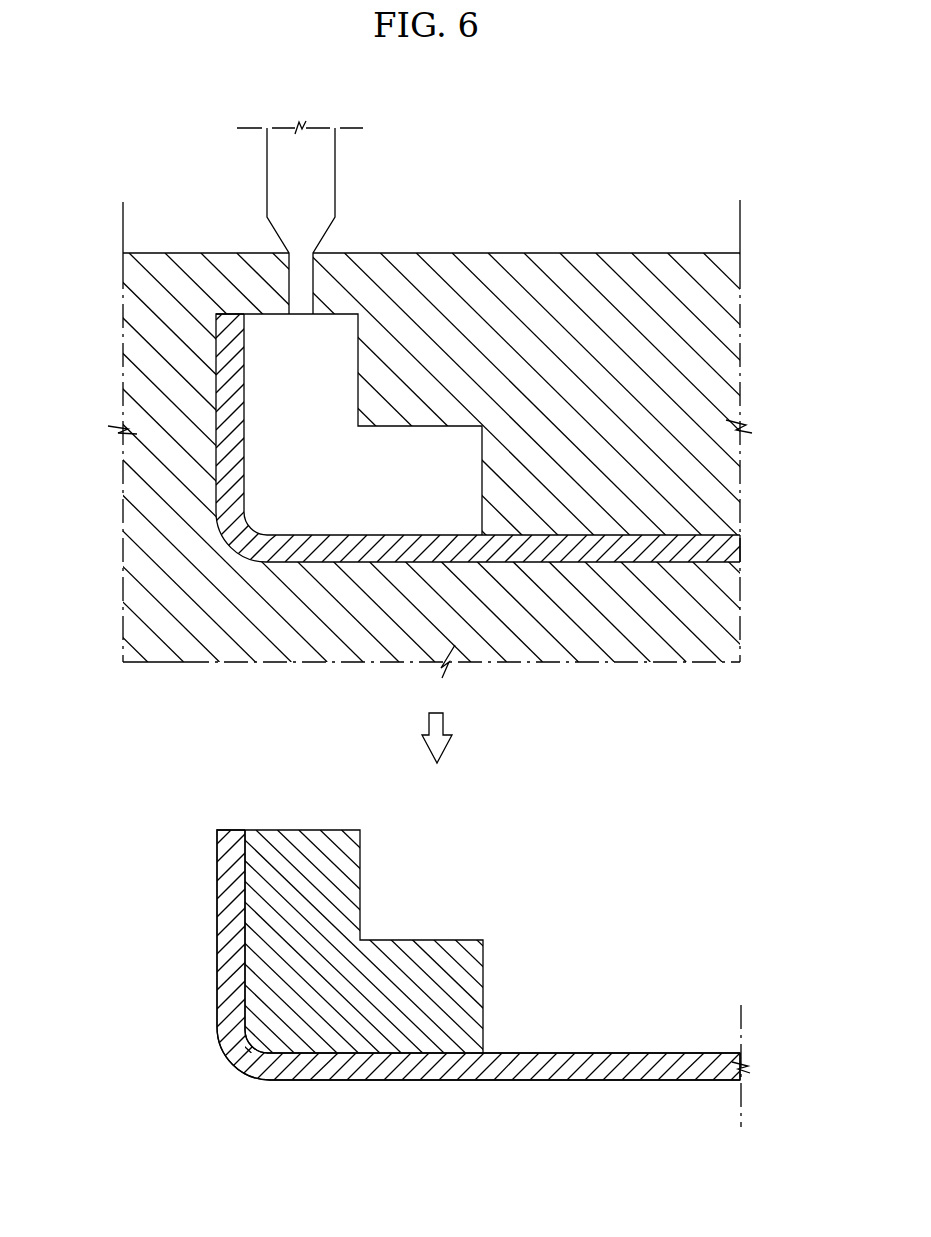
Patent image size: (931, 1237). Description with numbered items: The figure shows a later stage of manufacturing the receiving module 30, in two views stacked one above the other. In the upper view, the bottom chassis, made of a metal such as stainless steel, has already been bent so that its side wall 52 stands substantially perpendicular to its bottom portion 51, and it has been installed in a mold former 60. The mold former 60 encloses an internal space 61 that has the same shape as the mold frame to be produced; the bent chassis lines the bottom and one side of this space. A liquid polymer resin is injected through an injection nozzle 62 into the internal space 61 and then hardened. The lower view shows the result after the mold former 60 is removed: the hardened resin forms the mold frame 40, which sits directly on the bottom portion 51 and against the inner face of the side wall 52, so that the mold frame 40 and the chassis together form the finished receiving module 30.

The receiving module 30 is at (602, 892).
The mold frame 40 is at (290, 835).
The bottom portion 51 is at (531, 550).
The side wall 52 is at (223, 397).
The mold former 60 is at (523, 245).
The internal space 61 is at (258, 347).
The injection nozzle 62 is at (267, 170).